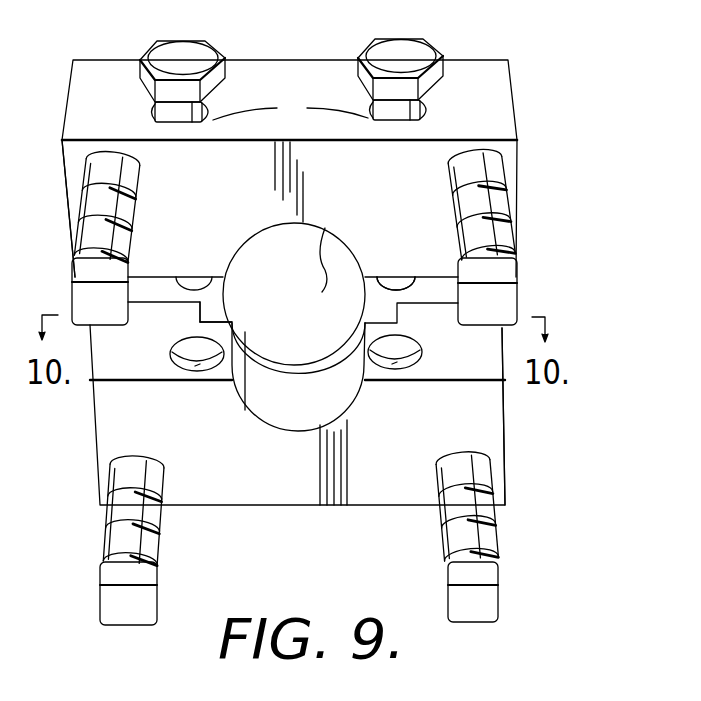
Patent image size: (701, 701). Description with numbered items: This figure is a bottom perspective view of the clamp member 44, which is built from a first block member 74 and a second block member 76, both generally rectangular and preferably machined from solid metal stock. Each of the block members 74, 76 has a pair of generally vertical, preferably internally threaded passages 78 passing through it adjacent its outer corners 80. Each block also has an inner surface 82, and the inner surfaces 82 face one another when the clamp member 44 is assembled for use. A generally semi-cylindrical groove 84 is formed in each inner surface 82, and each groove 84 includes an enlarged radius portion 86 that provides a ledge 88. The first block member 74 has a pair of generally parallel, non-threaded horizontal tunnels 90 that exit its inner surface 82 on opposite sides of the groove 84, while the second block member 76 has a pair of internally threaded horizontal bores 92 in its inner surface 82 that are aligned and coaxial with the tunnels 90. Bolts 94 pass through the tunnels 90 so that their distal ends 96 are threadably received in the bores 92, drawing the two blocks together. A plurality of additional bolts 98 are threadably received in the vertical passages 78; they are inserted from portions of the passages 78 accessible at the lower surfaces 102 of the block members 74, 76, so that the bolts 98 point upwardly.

The clamp member 44 is at (585, 242).
The first block member 74 is at (293, 62).
The second block member 76 is at (98, 430).
The vertical passages 78 is at (475, 152).
The outer corners 80 is at (62, 140).
The inner surface 82 is at (493, 376).
The semi-cylindrical groove 84 is at (266, 380).
The enlarged radius portion 86 is at (203, 318).
The ledge 88 is at (225, 318).
The horizontal tunnels 90 is at (290, 108).
The horizontal bores 92 is at (178, 360).
The bolts 94 is at (176, 45).
The distal ends 96 is at (382, 288).
The bolts 98 is at (76, 272).
The lower surfaces 102 is at (70, 173).